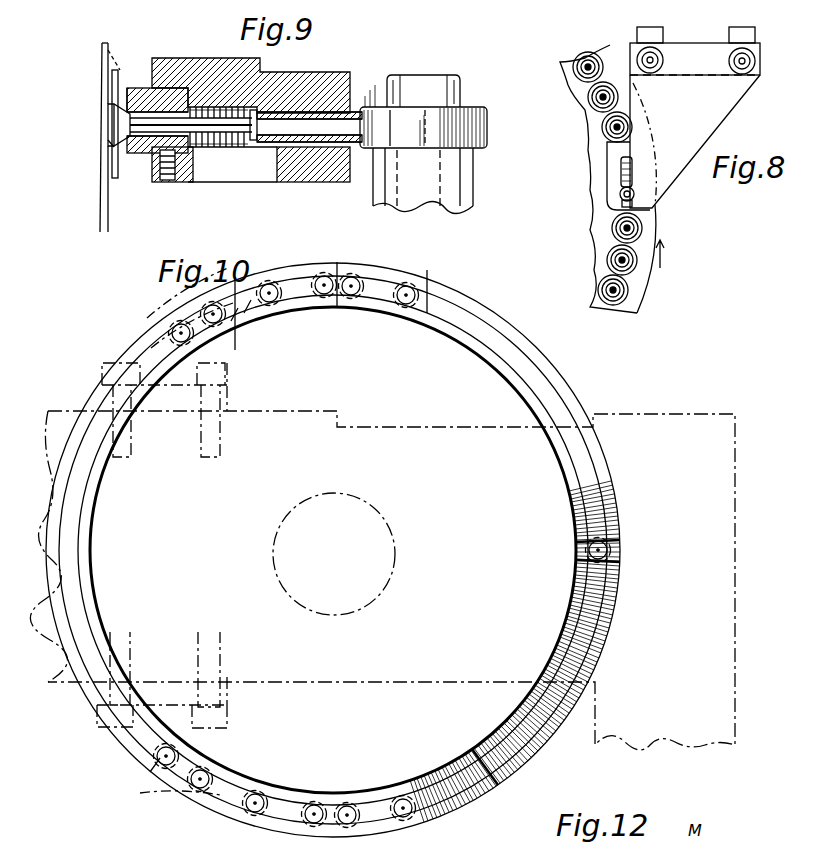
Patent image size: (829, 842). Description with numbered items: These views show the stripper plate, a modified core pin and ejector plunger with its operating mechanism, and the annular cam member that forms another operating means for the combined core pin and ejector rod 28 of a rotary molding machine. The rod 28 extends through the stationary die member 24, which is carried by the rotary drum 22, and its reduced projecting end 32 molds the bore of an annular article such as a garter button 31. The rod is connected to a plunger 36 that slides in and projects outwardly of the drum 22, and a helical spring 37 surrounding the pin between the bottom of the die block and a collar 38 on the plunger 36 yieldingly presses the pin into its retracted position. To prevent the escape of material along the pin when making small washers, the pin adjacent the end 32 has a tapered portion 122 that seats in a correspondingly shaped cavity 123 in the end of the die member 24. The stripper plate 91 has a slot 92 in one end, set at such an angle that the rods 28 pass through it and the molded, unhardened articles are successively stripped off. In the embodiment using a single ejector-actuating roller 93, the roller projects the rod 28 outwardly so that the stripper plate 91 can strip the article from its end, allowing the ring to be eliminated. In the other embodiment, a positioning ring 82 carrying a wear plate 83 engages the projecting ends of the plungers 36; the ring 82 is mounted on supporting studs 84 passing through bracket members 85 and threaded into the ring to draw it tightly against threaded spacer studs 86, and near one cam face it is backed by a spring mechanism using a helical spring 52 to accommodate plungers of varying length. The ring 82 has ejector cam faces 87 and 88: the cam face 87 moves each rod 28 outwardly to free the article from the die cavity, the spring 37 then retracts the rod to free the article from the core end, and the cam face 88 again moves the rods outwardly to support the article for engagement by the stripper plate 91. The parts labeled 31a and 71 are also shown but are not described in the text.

In FIG. 9, the drum 22 is at (336, 176).
In FIG. 8, the drum 22 is at (652, 223).
In FIG. 9, the stationary die member 24 is at (178, 104).
In FIG. 8, the stationary die member 24 is at (604, 128).
In FIG. 9, the combined core pin and ejector rod 28 is at (214, 126).
In FIG. 8, the garter button 31 is at (620, 196).
In FIG. 9, the head seat 31a is at (108, 142).
In FIG. 9, the reduced projecting end 32 is at (108, 127).
In FIG. 9, the plunger 36 is at (313, 130).
In FIG. 9, the helical spring 37 is at (222, 144).
In FIG. 9, the collar 38 is at (252, 144).
In FIG. 10, the helical spring 52 is at (142, 757).
In FIG. 10, the base body 71 is at (735, 505).
In FIG. 10, the positioning ring 82 is at (565, 388).
In FIG. 10, the wear plate 83 is at (520, 360).
In FIG. 10, the supporting studs 84 is at (166, 334).
In FIG. 10, the bracket members 85 is at (157, 312).
In FIG. 10, the threaded spacer studs 86 is at (232, 318).
In FIG. 10, the ejector cam face 87 is at (477, 757).
In FIG. 10, the ejector cam face 88 is at (577, 560).
In FIG. 9, the stripper plate 91 is at (106, 85).
In FIG. 8, the stripper plate 91 is at (712, 118).
In FIG. 8, the slot 92 is at (620, 177).
In FIG. 9, the ejector-actuating roller 93 is at (478, 127).
In FIG. 9, the tapered portion 122 is at (118, 180).
In FIG. 9, the cavity 123 is at (137, 88).